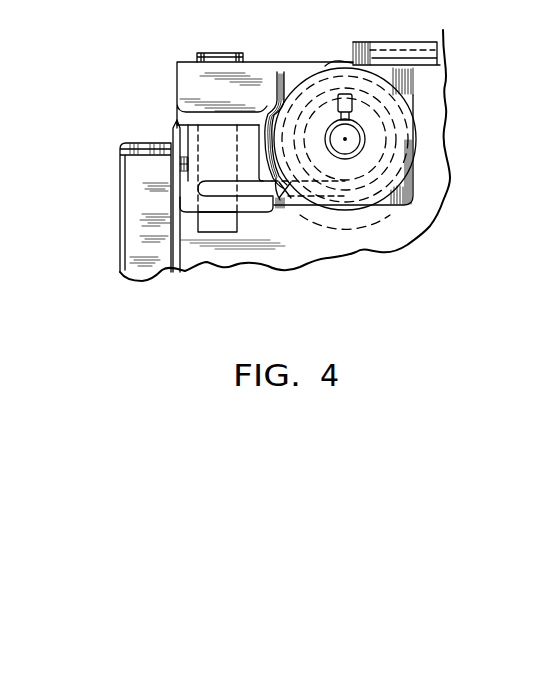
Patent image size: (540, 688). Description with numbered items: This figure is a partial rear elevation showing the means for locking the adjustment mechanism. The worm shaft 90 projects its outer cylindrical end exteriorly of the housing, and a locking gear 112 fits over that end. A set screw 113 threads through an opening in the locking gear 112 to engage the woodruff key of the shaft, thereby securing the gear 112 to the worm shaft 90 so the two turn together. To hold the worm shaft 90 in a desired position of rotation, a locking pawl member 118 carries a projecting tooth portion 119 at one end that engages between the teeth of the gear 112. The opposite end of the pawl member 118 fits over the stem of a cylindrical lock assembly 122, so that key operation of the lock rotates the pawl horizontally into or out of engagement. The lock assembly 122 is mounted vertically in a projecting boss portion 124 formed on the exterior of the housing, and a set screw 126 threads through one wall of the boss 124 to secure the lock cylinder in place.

The worm shaft 90 is at (356, 137).
The locking gear 112 is at (275, 99).
The set screw 113 is at (351, 106).
The locking pawl member 118 is at (198, 189).
The projecting tooth portion 119 is at (287, 186).
The cylindrical lock assembly 122 is at (196, 138).
The projecting boss portion 124 is at (188, 75).
The set screw 126 is at (178, 161).